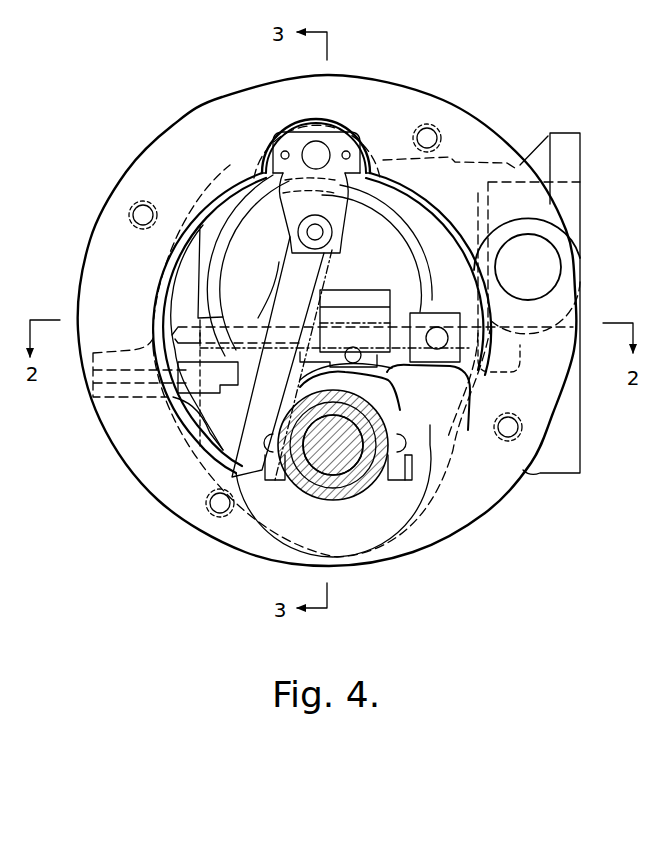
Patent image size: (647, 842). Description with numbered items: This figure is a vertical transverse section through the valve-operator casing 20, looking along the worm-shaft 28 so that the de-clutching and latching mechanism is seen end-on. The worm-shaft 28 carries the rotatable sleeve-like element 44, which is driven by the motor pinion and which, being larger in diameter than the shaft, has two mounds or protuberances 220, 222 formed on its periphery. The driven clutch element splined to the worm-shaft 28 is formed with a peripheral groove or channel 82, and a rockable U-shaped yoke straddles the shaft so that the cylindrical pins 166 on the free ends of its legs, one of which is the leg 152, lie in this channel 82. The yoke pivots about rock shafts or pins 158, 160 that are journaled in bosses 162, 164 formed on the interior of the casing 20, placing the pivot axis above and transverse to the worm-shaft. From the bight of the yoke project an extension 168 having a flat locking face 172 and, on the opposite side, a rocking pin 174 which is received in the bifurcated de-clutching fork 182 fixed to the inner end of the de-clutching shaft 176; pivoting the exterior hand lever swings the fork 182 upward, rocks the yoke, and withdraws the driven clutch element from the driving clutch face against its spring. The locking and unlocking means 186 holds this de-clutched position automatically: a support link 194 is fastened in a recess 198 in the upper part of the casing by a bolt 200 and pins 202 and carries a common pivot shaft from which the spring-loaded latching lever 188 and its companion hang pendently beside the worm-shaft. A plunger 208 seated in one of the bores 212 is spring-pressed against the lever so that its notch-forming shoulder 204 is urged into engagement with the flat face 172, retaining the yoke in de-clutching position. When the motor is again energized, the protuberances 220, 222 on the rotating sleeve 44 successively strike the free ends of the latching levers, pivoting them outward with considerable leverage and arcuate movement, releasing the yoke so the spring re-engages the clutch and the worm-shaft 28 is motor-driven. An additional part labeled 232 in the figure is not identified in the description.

The casing 20 is at (470, 505).
The worm-shaft 28 is at (313, 497).
The sleeve-like element 44 is at (360, 493).
The peripheral groove or channel 82 is at (330, 503).
The leg 152 is at (402, 423).
The rock shaft or pin 158 is at (492, 376).
The rock shaft or pin 160 is at (165, 328).
The boss 162 is at (410, 372).
The boss 164 is at (183, 310).
The pin or cylindrical protrusion 166 is at (377, 483).
The projecting portion or extension 168 is at (405, 292).
The flat surface 172 is at (345, 290).
The rocking pin 174 is at (355, 347).
The de-clutching shaft 176 is at (438, 327).
The de-clutching fork or link 182 is at (390, 378).
The locking and unlocking means 186 is at (292, 243).
The latching lever 188 is at (272, 295).
The support link 194 is at (340, 250).
The recess 198 is at (312, 124).
The bolt 200 is at (322, 142).
The pins 202 is at (280, 153).
The notch-forming shoulder 204 is at (305, 303).
The plunger 208 is at (213, 412).
The bores 212 is at (143, 387).
The protuberance 220 is at (272, 477).
The protuberance 222 is at (393, 463).
The return spring 232 is at (400, 253).